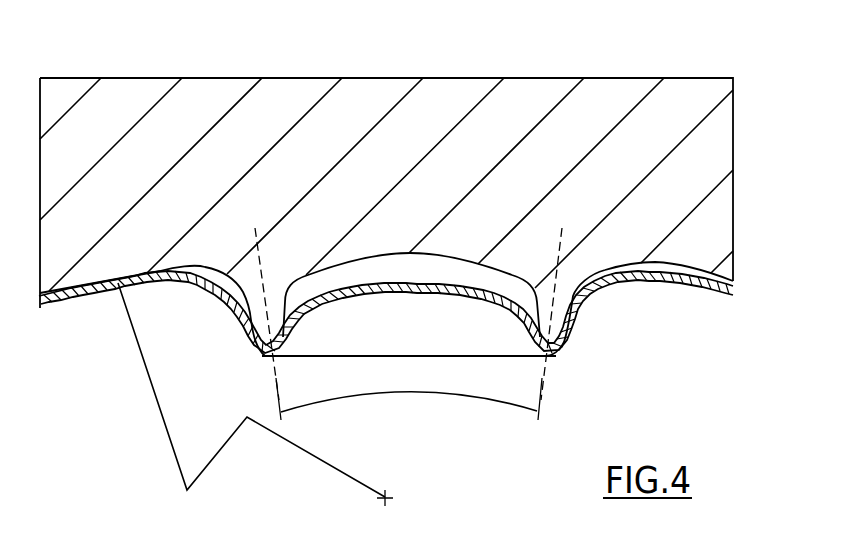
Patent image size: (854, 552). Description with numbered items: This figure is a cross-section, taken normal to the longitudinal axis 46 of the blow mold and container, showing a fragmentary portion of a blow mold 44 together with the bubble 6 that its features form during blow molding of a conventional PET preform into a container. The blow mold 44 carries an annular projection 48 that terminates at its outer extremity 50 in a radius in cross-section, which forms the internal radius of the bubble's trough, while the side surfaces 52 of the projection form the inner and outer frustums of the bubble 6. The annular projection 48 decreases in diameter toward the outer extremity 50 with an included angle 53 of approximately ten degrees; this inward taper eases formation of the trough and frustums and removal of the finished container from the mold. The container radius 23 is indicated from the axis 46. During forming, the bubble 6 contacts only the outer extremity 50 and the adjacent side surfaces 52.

The blow mold 44 is at (693, 187).
The bubble 6 is at (441, 304).
The annular projection 48 is at (586, 314).
The side surfaces 52 is at (580, 334).
The outer extremity 50 is at (560, 356).
The included angle 53 is at (381, 396).
The container radius 23 is at (168, 450).
The axis 46 is at (390, 497).